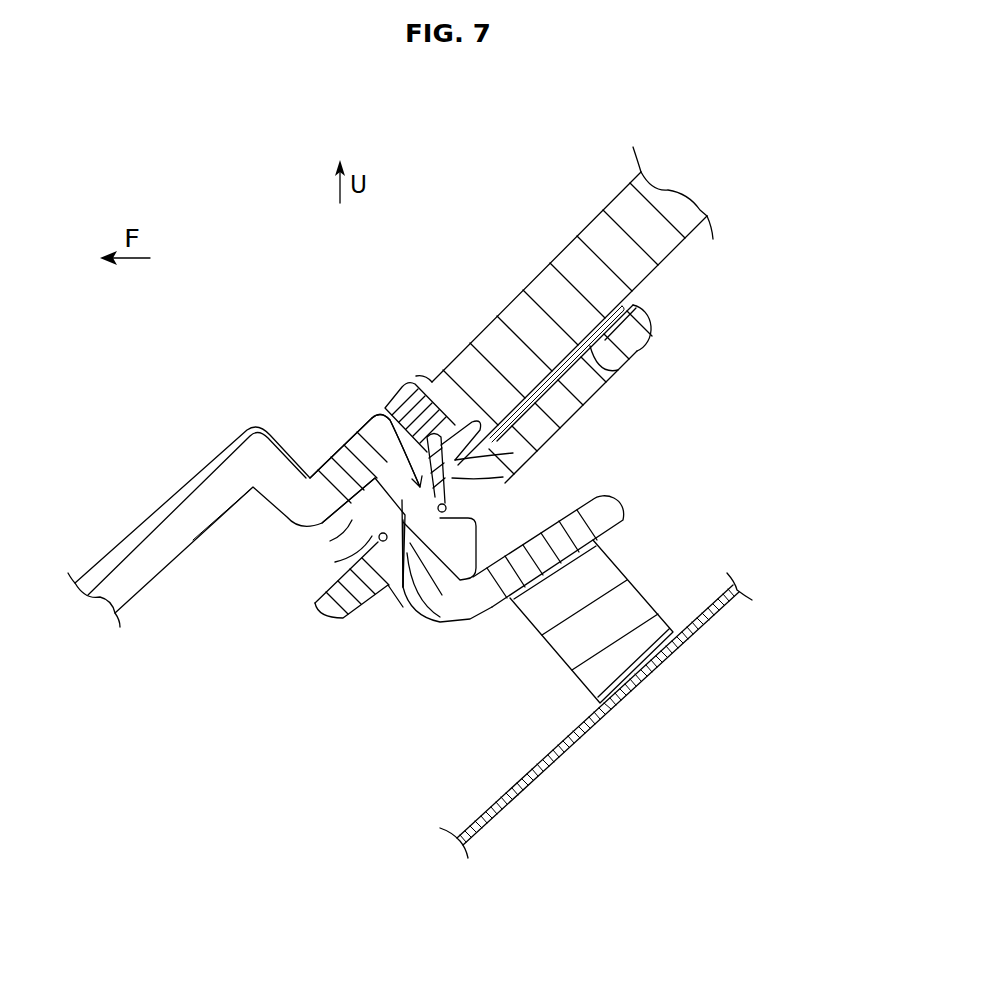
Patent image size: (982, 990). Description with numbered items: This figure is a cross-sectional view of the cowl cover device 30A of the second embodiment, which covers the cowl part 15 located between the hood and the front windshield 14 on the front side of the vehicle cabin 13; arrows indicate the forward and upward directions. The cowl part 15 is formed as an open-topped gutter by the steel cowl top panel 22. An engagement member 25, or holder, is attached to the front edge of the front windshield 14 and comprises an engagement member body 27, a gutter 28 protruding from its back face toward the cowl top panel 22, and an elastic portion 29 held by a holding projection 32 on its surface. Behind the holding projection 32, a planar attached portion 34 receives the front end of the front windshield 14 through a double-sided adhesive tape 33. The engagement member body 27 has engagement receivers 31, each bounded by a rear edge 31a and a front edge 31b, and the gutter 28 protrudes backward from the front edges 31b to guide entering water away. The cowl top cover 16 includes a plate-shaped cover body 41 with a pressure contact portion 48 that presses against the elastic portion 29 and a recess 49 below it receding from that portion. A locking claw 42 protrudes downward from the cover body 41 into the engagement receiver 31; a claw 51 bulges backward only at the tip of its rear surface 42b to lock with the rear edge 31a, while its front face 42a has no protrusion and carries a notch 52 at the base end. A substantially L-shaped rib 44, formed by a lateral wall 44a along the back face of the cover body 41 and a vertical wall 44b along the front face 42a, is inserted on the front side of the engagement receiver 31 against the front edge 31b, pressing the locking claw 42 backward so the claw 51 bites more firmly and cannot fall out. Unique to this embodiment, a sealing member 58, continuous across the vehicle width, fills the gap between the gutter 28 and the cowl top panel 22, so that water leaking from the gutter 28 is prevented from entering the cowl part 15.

The vehicle cabin 13 is at (752, 268).
The front windshield 14 is at (612, 218).
The cowl part 15 is at (218, 730).
The cowl top cover 16 is at (195, 492).
The cowl top panel 22 is at (695, 625).
The engagement member 25 is at (653, 321).
The engagement member body 27 is at (636, 338).
The gutter 28 is at (620, 515).
The elastic portion 29 is at (411, 377).
The cowl cover device 30A is at (310, 693).
The engagement receiver 31 is at (433, 582).
The rear edge 31a is at (503, 477).
The front edge 31b is at (375, 548).
The holding projection 32 is at (450, 430).
The double-sided adhesive tape 33 is at (558, 353).
The attached portion 34 is at (616, 365).
The cover body 41 is at (130, 548).
The locking claw 42 is at (485, 592).
The front face 42a is at (404, 560).
The rear surface 42b is at (513, 453).
The rib 44 is at (345, 500).
The lateral wall 44a is at (350, 528).
The vertical wall 44b is at (362, 548).
The pressure contact portion 48 is at (377, 412).
The recess 49 is at (433, 433).
The claw 51 is at (472, 545).
The notch 52 is at (368, 440).
The sealing member 58 is at (602, 565).